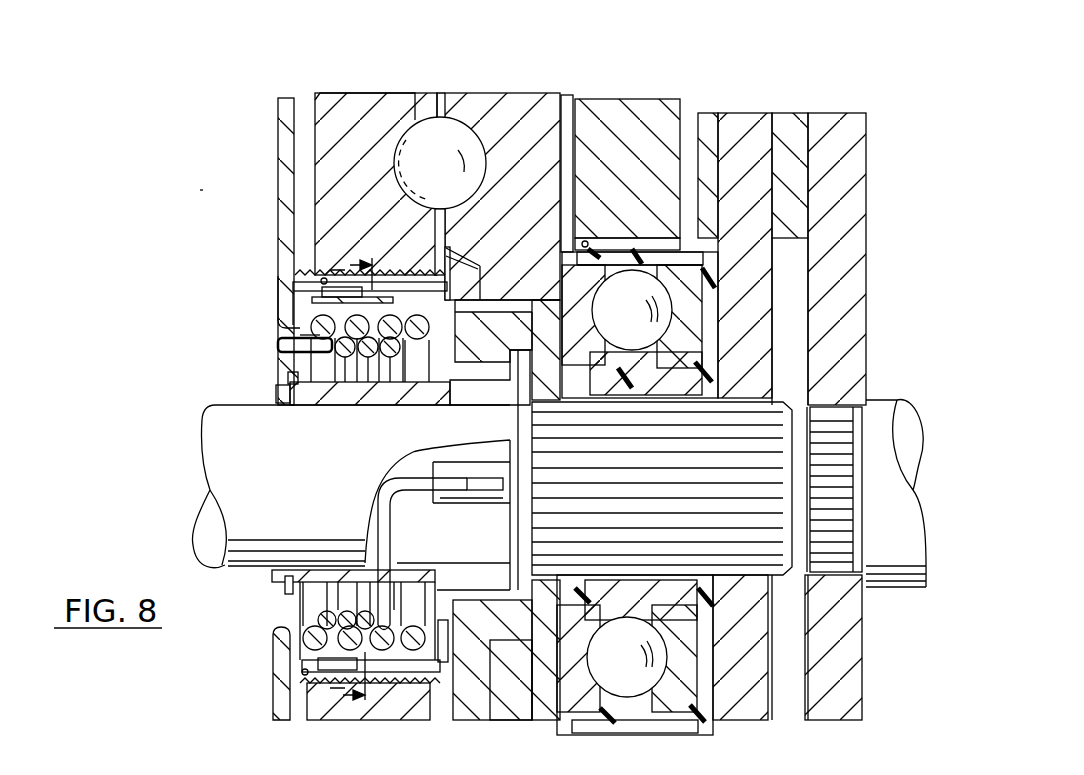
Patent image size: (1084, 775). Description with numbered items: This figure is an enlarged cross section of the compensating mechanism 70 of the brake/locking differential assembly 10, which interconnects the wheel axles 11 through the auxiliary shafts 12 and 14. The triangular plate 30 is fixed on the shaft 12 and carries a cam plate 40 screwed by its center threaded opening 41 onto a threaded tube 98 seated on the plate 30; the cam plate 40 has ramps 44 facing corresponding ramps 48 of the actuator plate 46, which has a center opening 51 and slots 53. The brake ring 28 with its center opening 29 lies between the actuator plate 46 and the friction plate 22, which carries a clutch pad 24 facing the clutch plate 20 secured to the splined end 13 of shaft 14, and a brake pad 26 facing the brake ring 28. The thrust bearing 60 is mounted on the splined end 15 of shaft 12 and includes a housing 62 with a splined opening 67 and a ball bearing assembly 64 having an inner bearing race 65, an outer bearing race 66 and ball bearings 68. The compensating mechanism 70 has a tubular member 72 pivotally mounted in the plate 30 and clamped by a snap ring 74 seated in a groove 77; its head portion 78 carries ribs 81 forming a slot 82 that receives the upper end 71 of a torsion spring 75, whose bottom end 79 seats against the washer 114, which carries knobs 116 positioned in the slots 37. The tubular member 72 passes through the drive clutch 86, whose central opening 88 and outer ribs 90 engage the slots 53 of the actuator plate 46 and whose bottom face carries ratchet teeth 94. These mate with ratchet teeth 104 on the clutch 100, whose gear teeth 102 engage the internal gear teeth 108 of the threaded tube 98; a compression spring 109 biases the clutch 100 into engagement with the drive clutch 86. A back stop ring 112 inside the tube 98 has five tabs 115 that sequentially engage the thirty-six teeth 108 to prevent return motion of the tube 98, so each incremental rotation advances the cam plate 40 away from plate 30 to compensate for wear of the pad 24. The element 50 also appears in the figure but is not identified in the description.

The brake/locking differential assembly 10 is at (196, 194).
The wheel axles 11 is at (357, 477).
The auxiliary shaft 12 is at (268, 460).
The splined end 13 is at (832, 408).
The auxiliary shaft 14 is at (890, 400).
The splined end 15 is at (786, 398).
The clutch plate 20 is at (855, 115).
The friction plate 22 is at (760, 115).
The clutch pad 24 is at (800, 115).
The brake pad 26 is at (712, 115).
The brake ring 28 is at (662, 103).
The center opening 29 is at (588, 238).
The triangular plate 30 is at (278, 106).
The slots 37 is at (300, 296).
The cam plate 40 is at (345, 96).
The center threaded opening 41 is at (318, 276).
The ramps 44 is at (424, 118).
The actuator plate 46 is at (566, 96).
The ramps 48 is at (470, 130).
The ball socket 50 is at (470, 126).
The center opening 51 is at (502, 690).
The slots 53 is at (548, 300).
The thrust bearing 60 is at (728, 262).
The housing 62 is at (708, 658).
The ball bearing assembly 64 is at (603, 278).
The inner bearing race 65 is at (700, 316).
The outer bearing race 66 is at (615, 262).
The splined opening 67 is at (705, 585).
The ball bearings 68 is at (641, 316).
The compensating mechanism 70 is at (268, 333).
The upper end 71 is at (402, 476).
The tubular member 72 is at (288, 576).
The snap ring 74 is at (288, 590).
The torsion spring 75 is at (305, 362).
The groove 77 is at (278, 388).
The head portion 78 is at (462, 387).
The bottom end 79 is at (282, 340).
The ribs 81 is at (488, 500).
The slot 82 is at (487, 478).
The drive clutch 86 is at (500, 314).
The central opening 88 is at (484, 690).
The ribs 90 is at (490, 304).
The ratchet teeth 94 is at (444, 662).
The threaded tube 98 is at (322, 282).
The clutch 100 is at (395, 718).
The gear teeth 102 is at (404, 275).
The ratchet teeth 104 is at (449, 296).
The internal gear teeth 108 is at (300, 665).
The compression spring 109 is at (322, 634).
The back stop ring 112 is at (318, 298).
The washer 114 is at (280, 630).
The tabs 115 is at (336, 273).
The knobs 116 is at (310, 292).